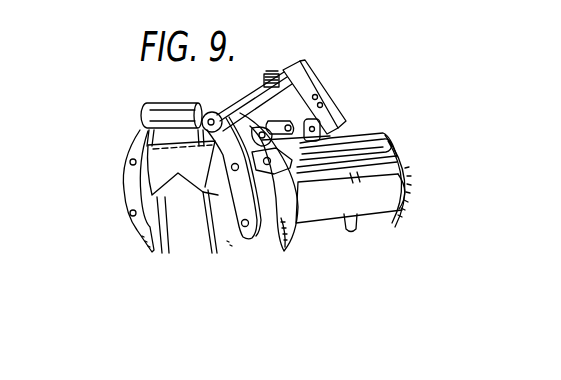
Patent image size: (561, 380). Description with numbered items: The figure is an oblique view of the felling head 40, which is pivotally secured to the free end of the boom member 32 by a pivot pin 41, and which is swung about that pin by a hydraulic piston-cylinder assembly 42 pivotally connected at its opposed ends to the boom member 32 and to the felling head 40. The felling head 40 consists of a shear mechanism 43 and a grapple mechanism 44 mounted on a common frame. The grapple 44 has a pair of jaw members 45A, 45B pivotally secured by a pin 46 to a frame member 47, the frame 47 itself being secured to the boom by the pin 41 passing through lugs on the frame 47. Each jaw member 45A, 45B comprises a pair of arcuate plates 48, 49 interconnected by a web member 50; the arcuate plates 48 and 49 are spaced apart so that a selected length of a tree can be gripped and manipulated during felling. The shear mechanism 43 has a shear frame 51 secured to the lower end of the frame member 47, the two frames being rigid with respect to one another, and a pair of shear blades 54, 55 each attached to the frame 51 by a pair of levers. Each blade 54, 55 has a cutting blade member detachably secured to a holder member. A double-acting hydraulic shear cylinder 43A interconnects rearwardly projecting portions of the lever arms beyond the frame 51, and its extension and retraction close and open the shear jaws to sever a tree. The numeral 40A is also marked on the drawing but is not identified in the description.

The boom member 32 is at (297, 77).
The felling head 40 is at (316, 233).
The actuating arm 40A is at (251, 112).
The pivot pin 41 is at (322, 122).
The hydraulic piston-cylinder assembly 42 is at (316, 97).
The shear mechanism 43 is at (233, 260).
The hydraulic shear cylinder 43A is at (156, 113).
The grapple mechanism 44 is at (408, 208).
The jaw member 45A is at (393, 178).
The jaw member 45B is at (358, 222).
The pin 46 is at (389, 136).
The frame member 47 is at (362, 133).
The arcuate plate 48 is at (392, 197).
The arcuate plate 49 is at (286, 258).
The web member 50 is at (330, 198).
The shear frame 51 is at (162, 170).
The shear blade 54 is at (210, 248).
The shear blade 55 is at (153, 247).